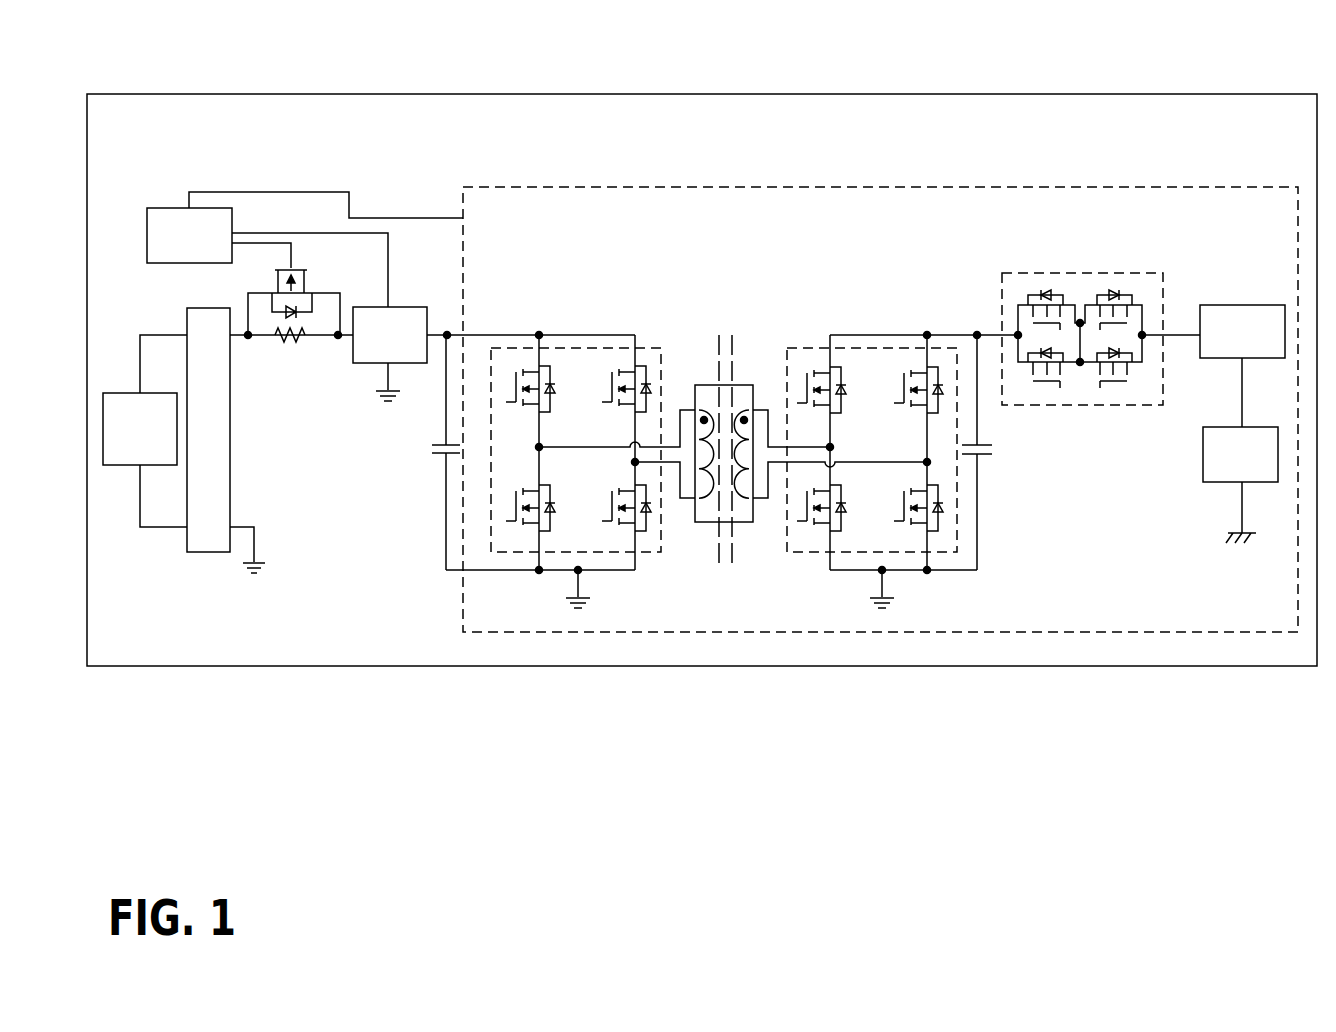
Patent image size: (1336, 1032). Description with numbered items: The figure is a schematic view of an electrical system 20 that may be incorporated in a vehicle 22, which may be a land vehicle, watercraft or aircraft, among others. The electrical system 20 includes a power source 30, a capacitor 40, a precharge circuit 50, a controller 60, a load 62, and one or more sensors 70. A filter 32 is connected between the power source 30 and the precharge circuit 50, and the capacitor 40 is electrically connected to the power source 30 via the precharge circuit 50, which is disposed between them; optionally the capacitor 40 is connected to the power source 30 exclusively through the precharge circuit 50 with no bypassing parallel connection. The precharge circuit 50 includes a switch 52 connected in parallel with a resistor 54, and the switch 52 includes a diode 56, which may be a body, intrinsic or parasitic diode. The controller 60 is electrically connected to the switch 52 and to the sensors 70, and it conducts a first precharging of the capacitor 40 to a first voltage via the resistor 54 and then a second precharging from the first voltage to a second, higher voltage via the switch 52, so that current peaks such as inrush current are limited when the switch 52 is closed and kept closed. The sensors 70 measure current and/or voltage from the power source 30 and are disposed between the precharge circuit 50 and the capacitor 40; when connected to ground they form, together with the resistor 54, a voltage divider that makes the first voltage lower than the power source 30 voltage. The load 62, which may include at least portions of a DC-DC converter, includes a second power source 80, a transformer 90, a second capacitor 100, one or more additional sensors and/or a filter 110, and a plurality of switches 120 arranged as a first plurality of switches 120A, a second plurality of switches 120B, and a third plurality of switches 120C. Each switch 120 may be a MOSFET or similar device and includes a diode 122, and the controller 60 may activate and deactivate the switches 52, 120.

The electrical system 20 is at (230, 161).
The vehicle 22 is at (882, 94).
The power source 30 is at (145, 431).
The filter 32 is at (270, 440).
The capacitor 40 is at (517, 471).
The precharge circuit 50 is at (246, 336).
The switch 52 is at (304, 268).
The resistor 54 is at (289, 351).
The diode 56 is at (297, 318).
The controller 60 is at (305, 249).
The load 62 is at (953, 187).
The sensors 70 is at (494, 354).
The second power source 80 is at (1240, 485).
The transformer 90 is at (731, 320).
The second capacitor 100 is at (1000, 451).
The additional sensors and/or filter 110 is at (1242, 366).
The switch 120 is at (523, 331).
The first plurality of switches 120A is at (583, 395).
The second plurality of switches 120B is at (880, 348).
The third plurality of switches 120C is at (1055, 273).
The diode 122 is at (552, 331).